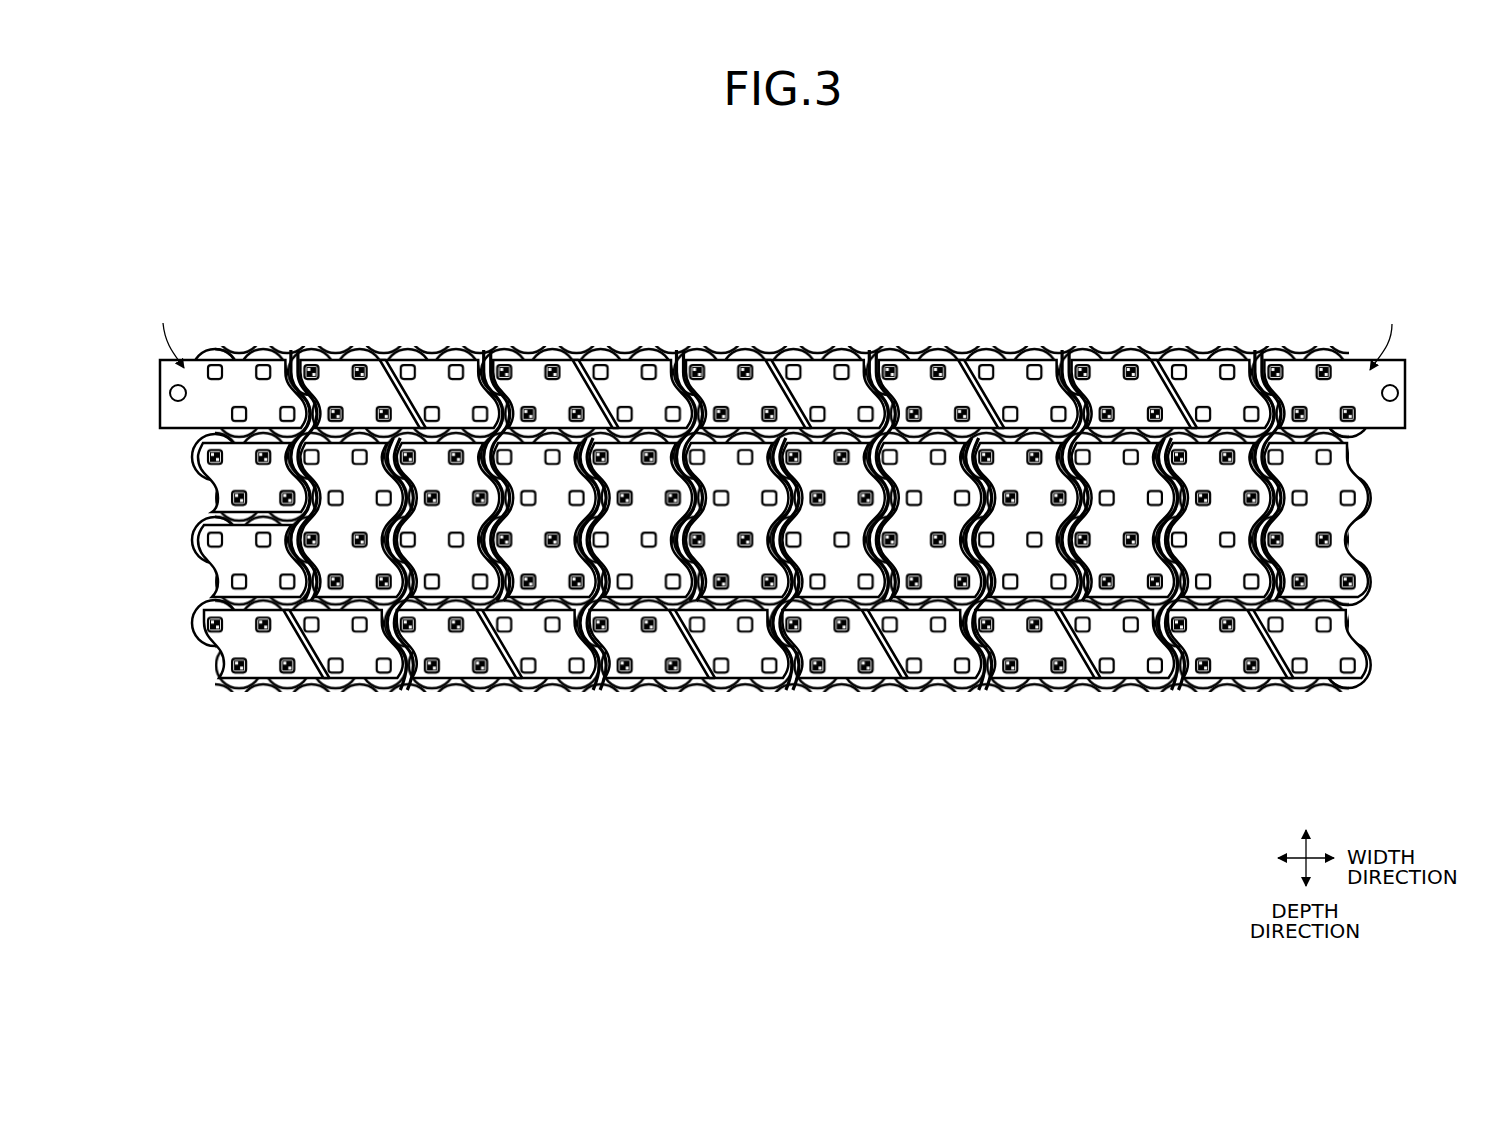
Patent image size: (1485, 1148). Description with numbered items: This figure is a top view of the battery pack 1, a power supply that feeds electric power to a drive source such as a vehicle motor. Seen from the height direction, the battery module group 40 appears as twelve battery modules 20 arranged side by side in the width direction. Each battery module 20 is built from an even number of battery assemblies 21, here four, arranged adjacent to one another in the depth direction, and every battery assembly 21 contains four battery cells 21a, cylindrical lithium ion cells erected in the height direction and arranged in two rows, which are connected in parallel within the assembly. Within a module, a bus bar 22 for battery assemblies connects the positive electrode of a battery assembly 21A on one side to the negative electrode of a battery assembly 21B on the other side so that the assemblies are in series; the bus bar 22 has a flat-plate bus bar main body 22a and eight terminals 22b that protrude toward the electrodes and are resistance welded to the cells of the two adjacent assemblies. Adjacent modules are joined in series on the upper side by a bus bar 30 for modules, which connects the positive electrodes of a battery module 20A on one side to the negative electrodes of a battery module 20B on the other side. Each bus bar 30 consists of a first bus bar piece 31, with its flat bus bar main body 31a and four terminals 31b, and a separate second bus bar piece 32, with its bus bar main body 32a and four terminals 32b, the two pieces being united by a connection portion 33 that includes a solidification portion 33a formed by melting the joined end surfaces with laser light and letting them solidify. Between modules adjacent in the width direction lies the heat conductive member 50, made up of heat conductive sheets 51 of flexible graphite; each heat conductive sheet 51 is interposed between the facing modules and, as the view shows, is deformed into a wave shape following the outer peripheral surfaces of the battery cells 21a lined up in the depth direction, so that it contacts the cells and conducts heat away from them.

The battery pack 1 is at (622, 243).
The battery module group 40 is at (781, 432).
The battery module 20 is at (785, 555).
The battery module on one side 20A is at (1085, 693).
The battery module on the other side 20B is at (988, 693).
The battery assembly 21 is at (202, 540).
The battery assembly on one side 21A is at (198, 562).
The battery assembly on the other side 21B is at (193, 468).
The battery cell 21a is at (186, 463).
The bus bar for battery assemblies 22 is at (799, 471).
The bus bar main body 22a is at (290, 440).
The terminal 22b is at (280, 445).
The bus bar for modules 30 is at (785, 517).
The first bus bar piece 31 is at (943, 357).
The bus bar main body 31a is at (578, 519).
The terminal 31b is at (905, 405).
The second bus bar piece 32 is at (972, 357).
The bus bar main body 32a is at (698, 519).
The terminal 32b is at (698, 513).
The connection portion 33 is at (960, 357).
The solidification portion 33a is at (638, 519).
The heat conductive member 50 is at (1270, 787).
The heat conductive sheet 51 is at (775, 561).